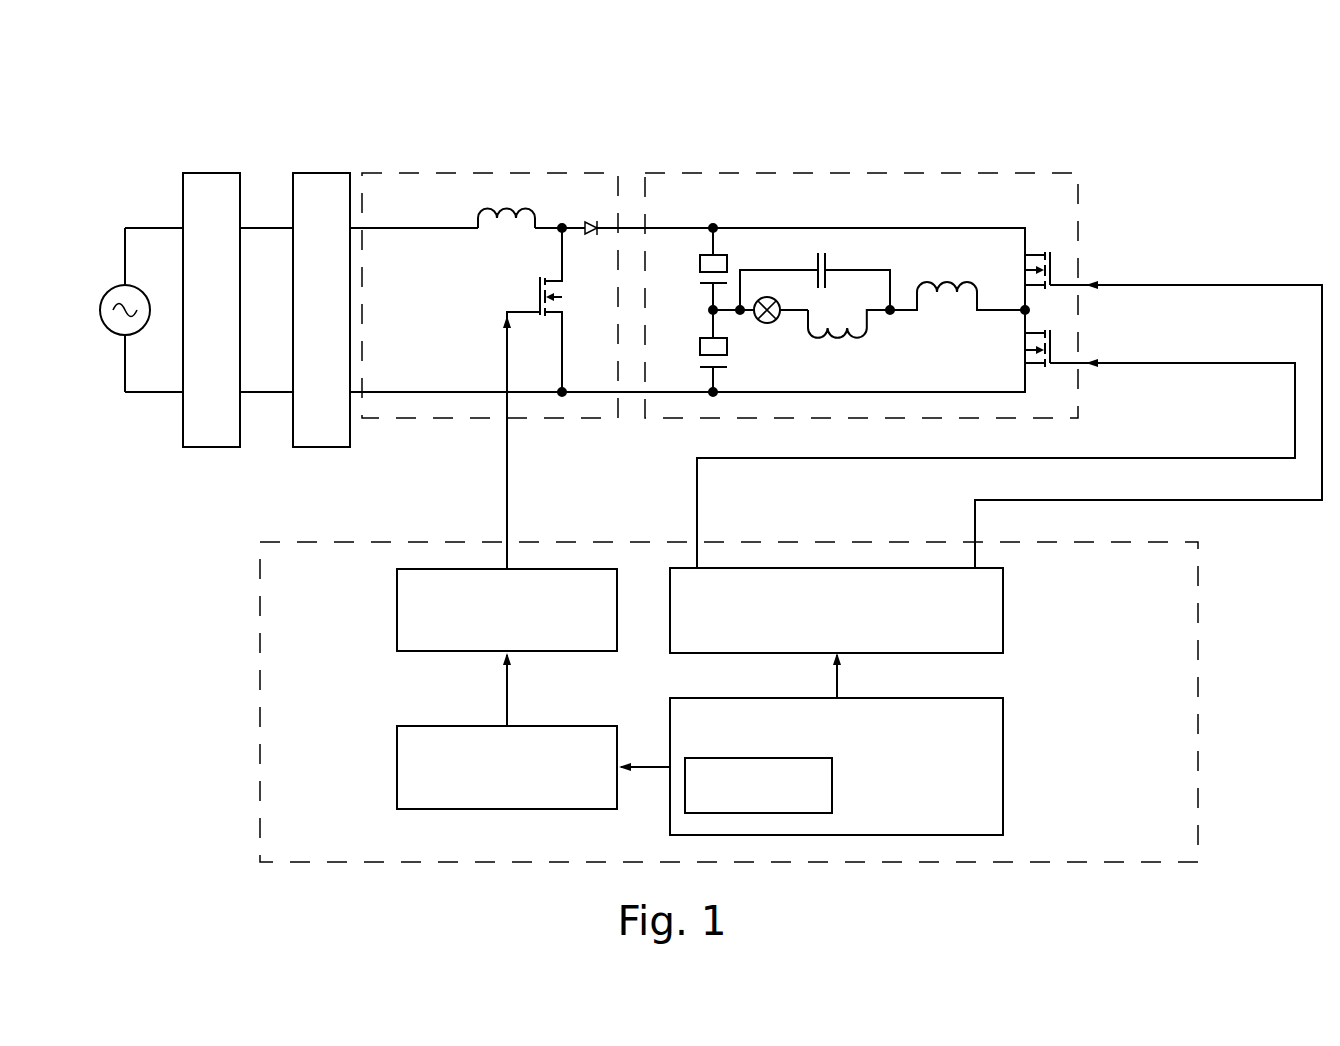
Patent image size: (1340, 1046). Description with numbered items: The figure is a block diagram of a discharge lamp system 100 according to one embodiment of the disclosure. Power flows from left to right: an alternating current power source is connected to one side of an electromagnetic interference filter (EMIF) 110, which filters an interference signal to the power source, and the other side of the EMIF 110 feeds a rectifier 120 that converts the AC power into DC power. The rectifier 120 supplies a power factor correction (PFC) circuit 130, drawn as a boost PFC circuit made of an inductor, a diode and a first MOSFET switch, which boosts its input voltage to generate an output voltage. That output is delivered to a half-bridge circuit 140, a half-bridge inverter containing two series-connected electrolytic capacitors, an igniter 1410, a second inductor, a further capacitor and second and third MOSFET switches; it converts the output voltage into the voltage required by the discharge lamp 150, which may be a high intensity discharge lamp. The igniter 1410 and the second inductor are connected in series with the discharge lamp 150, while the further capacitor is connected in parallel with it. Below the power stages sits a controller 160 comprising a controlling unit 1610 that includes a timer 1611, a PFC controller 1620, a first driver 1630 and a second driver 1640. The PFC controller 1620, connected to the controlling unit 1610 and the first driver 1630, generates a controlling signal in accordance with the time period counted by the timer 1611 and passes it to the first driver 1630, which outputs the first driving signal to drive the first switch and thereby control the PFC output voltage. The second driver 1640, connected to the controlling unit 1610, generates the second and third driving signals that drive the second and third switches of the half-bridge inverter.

The discharge lamp system 100 is at (107, 152).
The electromagnetic interference filter (EMIF) 110 is at (208, 173).
The rectifier 120 is at (317, 173).
The power factor correction (PFC) circuit 130 is at (552, 173).
The half-bridge circuit 140 is at (814, 173).
The discharge lamp 150 is at (767, 323).
The igniter 1410 is at (842, 339).
The controller 160 is at (1199, 655).
The controlling unit 1610 is at (1004, 764).
The timer 1611 is at (833, 786).
The PFC controller 1620 is at (397, 764).
The first driver 1630 is at (397, 607).
The second driver 1640 is at (1004, 609).